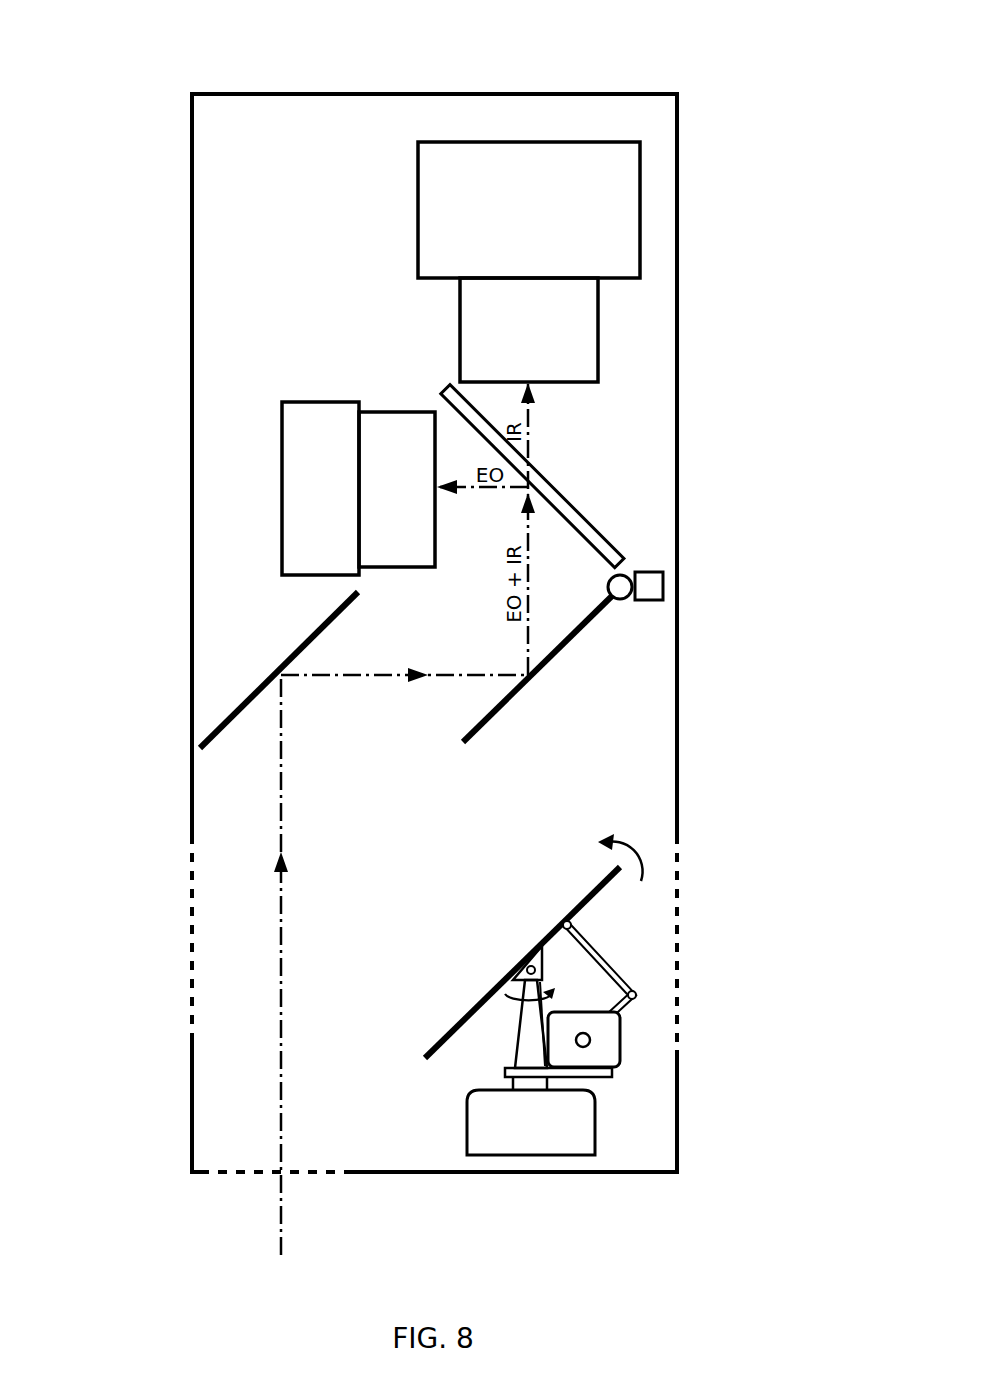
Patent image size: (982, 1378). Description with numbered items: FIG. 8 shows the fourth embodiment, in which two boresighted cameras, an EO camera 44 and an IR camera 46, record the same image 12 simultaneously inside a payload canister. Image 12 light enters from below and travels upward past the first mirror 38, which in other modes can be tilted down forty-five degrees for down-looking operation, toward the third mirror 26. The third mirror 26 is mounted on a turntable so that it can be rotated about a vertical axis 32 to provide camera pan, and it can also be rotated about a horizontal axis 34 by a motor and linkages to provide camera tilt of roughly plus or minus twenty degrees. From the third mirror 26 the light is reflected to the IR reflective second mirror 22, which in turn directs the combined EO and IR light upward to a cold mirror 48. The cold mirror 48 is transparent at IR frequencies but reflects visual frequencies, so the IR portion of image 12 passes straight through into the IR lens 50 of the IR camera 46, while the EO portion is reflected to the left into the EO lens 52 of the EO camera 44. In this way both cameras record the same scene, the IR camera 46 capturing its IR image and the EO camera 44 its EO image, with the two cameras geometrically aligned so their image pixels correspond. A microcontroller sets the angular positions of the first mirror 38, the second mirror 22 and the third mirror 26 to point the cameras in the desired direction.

The target image 12 is at (280, 1190).
The IR reflective mirror M2 22 is at (553, 660).
The mirror M3 26 is at (477, 1003).
The vertical axis 32 is at (513, 997).
The horizontal axis 34 is at (633, 845).
The mirror M1 38 is at (240, 708).
The EO camera 44 is at (307, 433).
The IR camera 46 is at (480, 175).
The cold mirror 48 is at (550, 487).
The IR lens 50 is at (573, 348).
The EO lens 52 is at (397, 428).